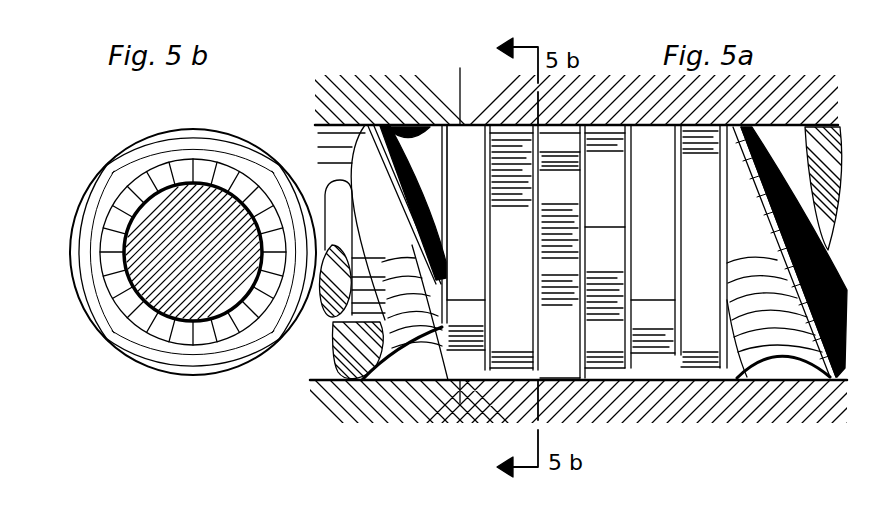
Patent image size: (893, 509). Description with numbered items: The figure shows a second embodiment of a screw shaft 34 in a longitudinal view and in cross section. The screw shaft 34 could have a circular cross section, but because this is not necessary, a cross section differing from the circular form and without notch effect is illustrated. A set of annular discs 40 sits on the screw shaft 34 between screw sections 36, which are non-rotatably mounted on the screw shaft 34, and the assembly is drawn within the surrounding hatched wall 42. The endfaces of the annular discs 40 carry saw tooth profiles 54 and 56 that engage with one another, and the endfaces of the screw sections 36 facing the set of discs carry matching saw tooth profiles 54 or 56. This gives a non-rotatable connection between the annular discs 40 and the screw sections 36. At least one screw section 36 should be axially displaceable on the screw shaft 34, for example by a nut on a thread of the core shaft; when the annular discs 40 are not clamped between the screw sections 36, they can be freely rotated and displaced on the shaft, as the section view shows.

In FIG. 5A, the screw shaft 34 is at (318, 318).
In FIG. 5B, the screw shaft 34 is at (140, 323).
In FIG. 5A, the screw sections 36 is at (763, 340).
In FIG. 5A, the annular discs 40 is at (563, 160).
In FIG. 5A, the housing wall 42 is at (663, 120).
In FIG. 5A, the saw tooth profile 54 is at (448, 305).
In FIG. 5B, the saw tooth profile 54 is at (197, 330).
In FIG. 5A, the saw tooth profile 56 is at (442, 323).